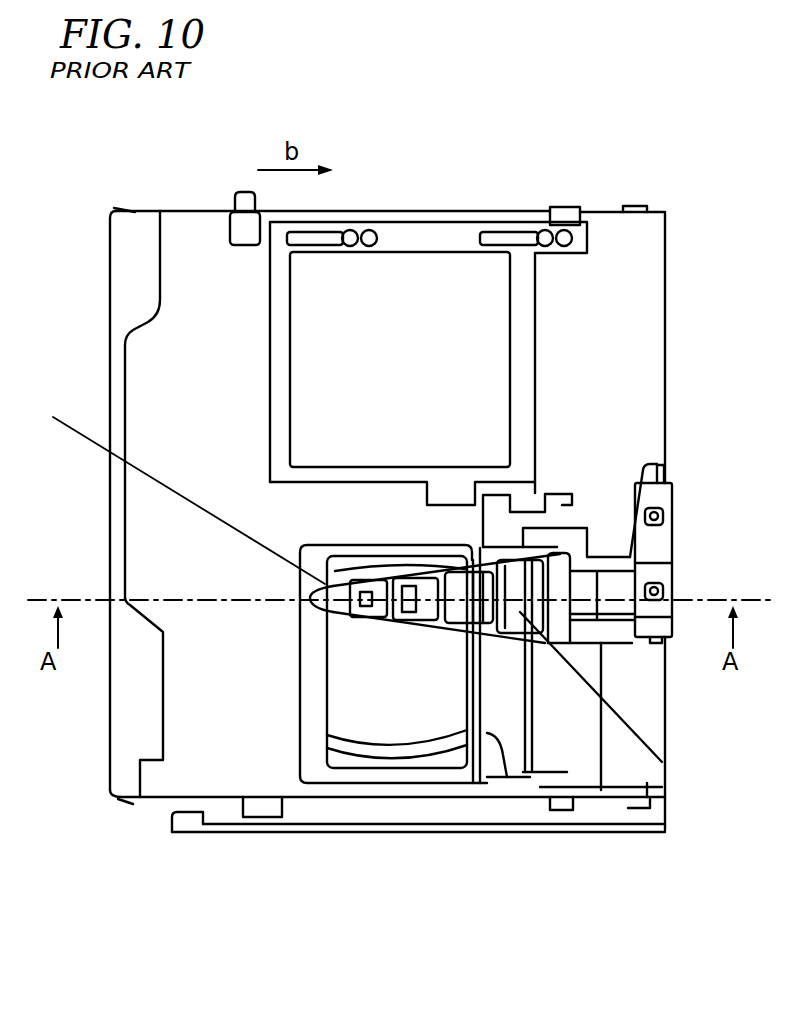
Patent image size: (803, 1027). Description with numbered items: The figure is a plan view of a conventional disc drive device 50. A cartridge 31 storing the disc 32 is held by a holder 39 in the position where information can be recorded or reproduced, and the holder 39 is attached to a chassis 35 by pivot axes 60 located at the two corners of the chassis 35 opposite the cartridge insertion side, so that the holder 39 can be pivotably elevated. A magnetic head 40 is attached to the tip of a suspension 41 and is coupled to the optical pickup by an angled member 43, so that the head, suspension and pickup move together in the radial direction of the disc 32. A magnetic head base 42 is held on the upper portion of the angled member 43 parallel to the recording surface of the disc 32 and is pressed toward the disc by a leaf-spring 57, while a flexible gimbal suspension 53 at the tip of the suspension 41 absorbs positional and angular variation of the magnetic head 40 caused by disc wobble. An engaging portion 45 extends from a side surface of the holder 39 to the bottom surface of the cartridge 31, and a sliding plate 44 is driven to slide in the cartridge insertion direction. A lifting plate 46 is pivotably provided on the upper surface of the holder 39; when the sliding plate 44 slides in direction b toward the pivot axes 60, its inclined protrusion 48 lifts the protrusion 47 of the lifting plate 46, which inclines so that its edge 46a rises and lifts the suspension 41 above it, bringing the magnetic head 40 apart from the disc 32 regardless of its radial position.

The conventional disc drive device 50 is at (385, 133).
The holder 39 is at (207, 255).
The cartridge 31 is at (138, 720).
The magnetic head base 42 is at (291, 519).
The sliding plate 44 is at (452, 233).
The engaging portion 45 is at (593, 205).
The pivot axes 60 is at (647, 204).
The inclined protrusion 48 is at (462, 493).
The protrusion 47 is at (517, 497).
The angled member 43 is at (673, 573).
The lifting plate 46 is at (503, 733).
The edge 46a is at (487, 735).
The disc 32 is at (397, 700).
The gimbal suspension 53 is at (388, 632).
The leaf-spring 57 is at (588, 597).
The suspension 41 is at (662, 762).
The magnetic head 40 is at (200, 803).
The chassis 35 is at (460, 813).